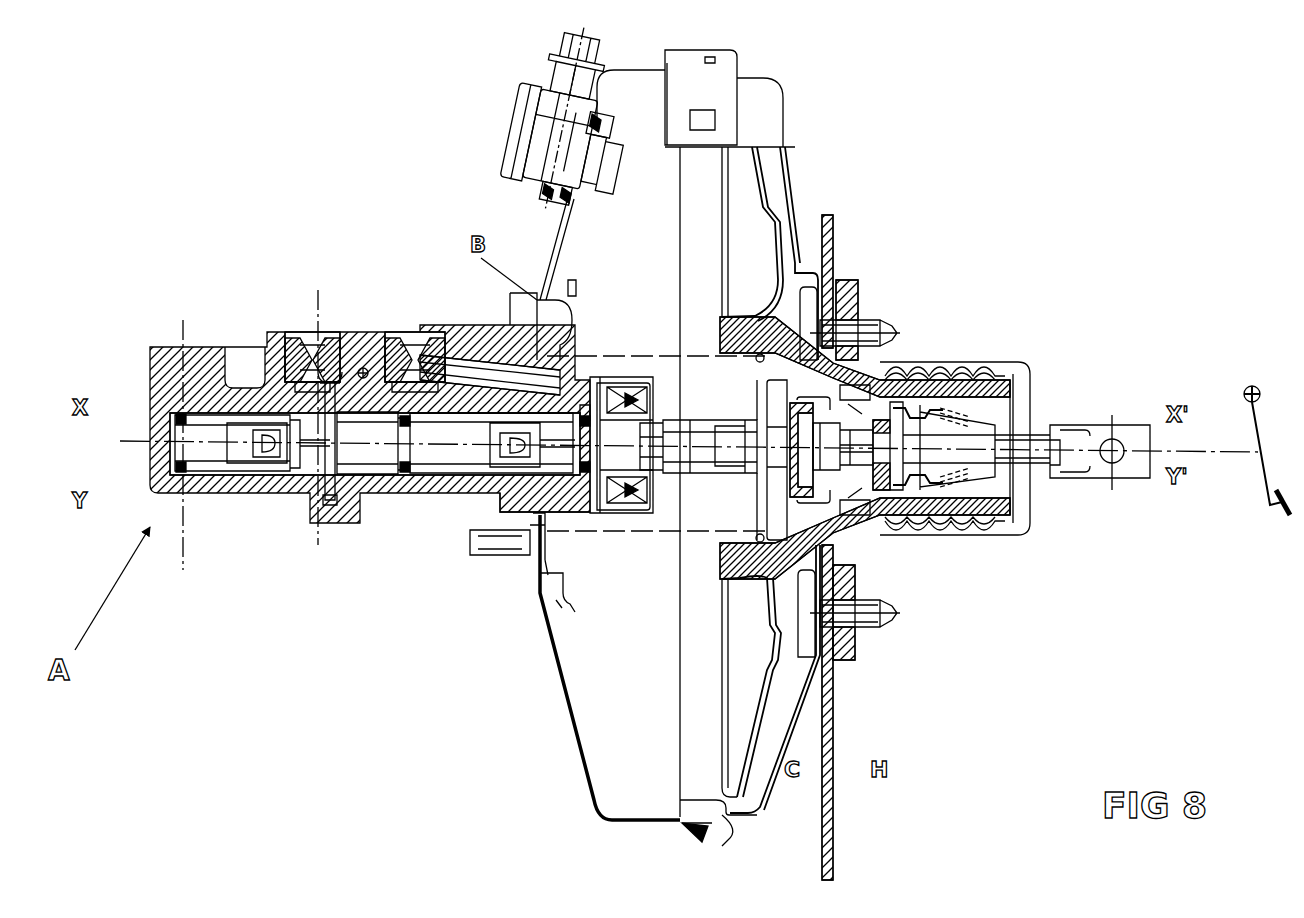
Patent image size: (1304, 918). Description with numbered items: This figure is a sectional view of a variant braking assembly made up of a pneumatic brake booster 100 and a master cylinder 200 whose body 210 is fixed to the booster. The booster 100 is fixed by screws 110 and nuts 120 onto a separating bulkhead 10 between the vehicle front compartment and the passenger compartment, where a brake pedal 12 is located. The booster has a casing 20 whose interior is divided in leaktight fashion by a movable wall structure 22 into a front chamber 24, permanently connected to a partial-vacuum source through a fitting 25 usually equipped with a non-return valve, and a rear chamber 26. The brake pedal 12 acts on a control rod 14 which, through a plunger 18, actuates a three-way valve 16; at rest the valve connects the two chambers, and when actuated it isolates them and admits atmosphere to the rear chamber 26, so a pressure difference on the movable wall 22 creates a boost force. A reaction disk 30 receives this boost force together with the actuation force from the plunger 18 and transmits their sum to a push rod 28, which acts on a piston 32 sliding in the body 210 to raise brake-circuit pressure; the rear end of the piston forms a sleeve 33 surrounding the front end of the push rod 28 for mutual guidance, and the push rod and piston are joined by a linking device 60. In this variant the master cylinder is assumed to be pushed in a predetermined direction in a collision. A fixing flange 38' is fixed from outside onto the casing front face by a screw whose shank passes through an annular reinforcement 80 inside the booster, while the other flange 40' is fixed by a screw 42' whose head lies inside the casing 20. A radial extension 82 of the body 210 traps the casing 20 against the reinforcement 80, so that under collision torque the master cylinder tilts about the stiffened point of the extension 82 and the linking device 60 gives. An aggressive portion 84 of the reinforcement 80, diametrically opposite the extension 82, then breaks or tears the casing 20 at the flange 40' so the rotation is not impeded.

The separating bulkhead 10 is at (833, 678).
The brake pedal 12 is at (1258, 452).
The control rod 14 is at (1026, 437).
The three-way valve 16 is at (903, 523).
The plunger 18 is at (903, 400).
The casing 20 is at (570, 712).
The movable wall structure 22 is at (728, 563).
The front chamber 24 is at (645, 713).
The rear chamber 26 is at (795, 725).
The push rod 28 is at (718, 448).
The reaction disk 30 is at (805, 437).
The piston 32 is at (563, 410).
The sleeve 33 is at (650, 423).
The fixing flange 38' is at (476, 317).
The fixing flange 40' is at (370, 459).
The screw 42' is at (469, 577).
The linking device 60 is at (765, 483).
The annular reinforcement 80 is at (573, 278).
The radial extension 82 is at (517, 307).
The aggressive portion 84 is at (560, 617).
The pneumatic brake booster 100 is at (810, 220).
The screws 110 is at (838, 612).
The nuts 120 is at (846, 300).
The master cylinder 200 is at (316, 282).
The body 210 is at (238, 480).
The fitting 25 is at (515, 112).